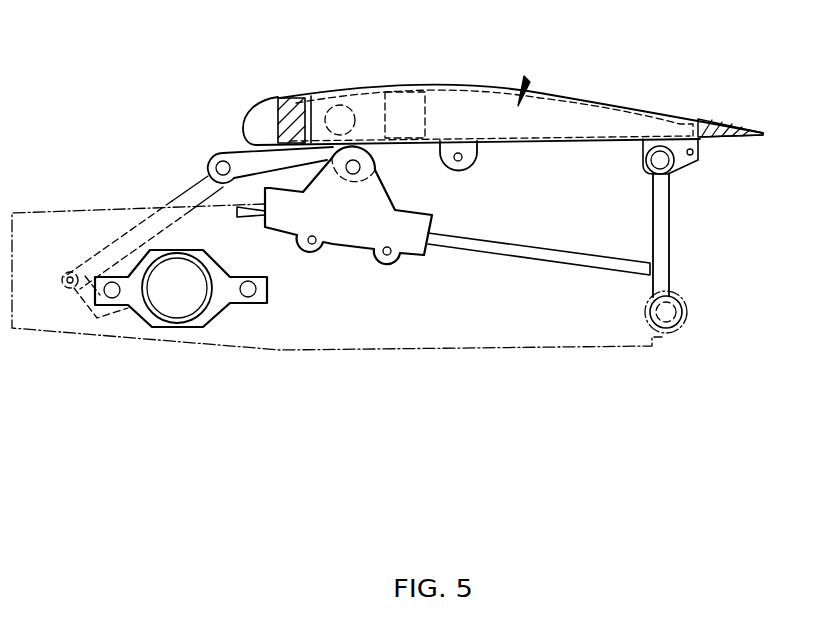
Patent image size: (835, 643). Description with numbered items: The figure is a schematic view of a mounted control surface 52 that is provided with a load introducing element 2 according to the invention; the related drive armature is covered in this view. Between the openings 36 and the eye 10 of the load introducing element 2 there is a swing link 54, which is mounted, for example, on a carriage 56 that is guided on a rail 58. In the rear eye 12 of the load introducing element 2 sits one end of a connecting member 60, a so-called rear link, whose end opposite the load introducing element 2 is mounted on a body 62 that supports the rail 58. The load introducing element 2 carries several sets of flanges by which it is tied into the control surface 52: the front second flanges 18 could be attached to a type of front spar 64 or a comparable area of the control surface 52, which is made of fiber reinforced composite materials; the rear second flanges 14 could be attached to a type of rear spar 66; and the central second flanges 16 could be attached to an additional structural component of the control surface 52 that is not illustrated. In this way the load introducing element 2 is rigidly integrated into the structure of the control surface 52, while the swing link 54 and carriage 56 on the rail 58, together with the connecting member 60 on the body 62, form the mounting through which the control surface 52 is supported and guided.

The load introducing element 2 is at (582, 112).
The eye 10 is at (481, 163).
The rear eye 12 is at (662, 162).
The rear second flanges 14 is at (700, 124).
The central second flanges 16 is at (404, 98).
The front second flanges 18 is at (309, 96).
The openings 36 is at (341, 115).
The control surface 52 is at (527, 80).
The swing link 54 is at (412, 150).
The carriage 56 is at (345, 220).
The rail 58 is at (574, 268).
The connecting member 60 is at (670, 250).
The body 62 is at (395, 347).
The front spar 64 is at (281, 104).
The rear spar 66 is at (737, 133).